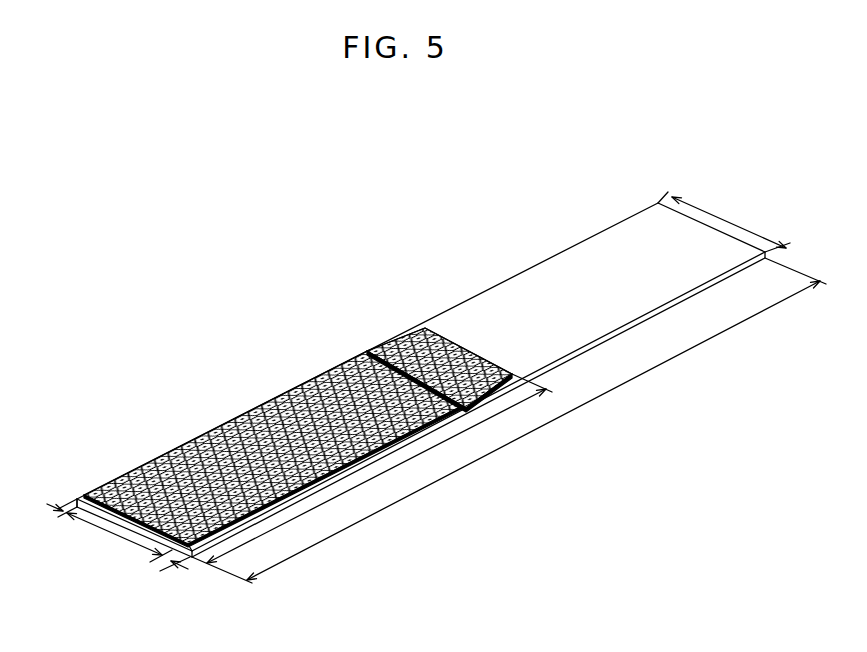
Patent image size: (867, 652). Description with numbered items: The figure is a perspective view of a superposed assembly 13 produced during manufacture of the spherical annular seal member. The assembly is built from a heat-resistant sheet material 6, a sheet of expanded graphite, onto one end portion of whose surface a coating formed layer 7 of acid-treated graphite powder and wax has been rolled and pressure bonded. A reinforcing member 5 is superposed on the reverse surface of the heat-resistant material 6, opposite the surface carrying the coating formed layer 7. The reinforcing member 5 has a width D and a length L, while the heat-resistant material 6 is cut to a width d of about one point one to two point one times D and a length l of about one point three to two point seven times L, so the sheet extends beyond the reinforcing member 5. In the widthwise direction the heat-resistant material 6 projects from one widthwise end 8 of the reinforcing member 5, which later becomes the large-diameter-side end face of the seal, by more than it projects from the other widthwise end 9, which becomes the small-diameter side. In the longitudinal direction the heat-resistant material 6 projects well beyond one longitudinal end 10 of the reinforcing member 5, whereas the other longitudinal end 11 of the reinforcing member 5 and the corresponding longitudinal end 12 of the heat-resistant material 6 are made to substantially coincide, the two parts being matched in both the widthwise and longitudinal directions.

The reinforcing member 5 is at (285, 410).
The heat-resistant sheet material 6 is at (603, 248).
The coating formed layer 7 is at (200, 558).
The one widthwise end of the reinforcing member 8 is at (191, 557).
The other widthwise end of the reinforcing member 9 is at (398, 338).
The one longitudinal end of the reinforcing member 10 is at (477, 350).
The other longitudinal end of the reinforcing member 11 is at (103, 497).
The longitudinal end of the heat-resistant material 12 is at (78, 497).
The superposed assembly 13 is at (502, 247).
The width of the heat-resistant sheet material d is at (722, 219).
The width of the reinforcing member D is at (102, 533).
The length of the reinforcing member L is at (522, 405).
The length of the heat-resistant sheet material l is at (555, 417).